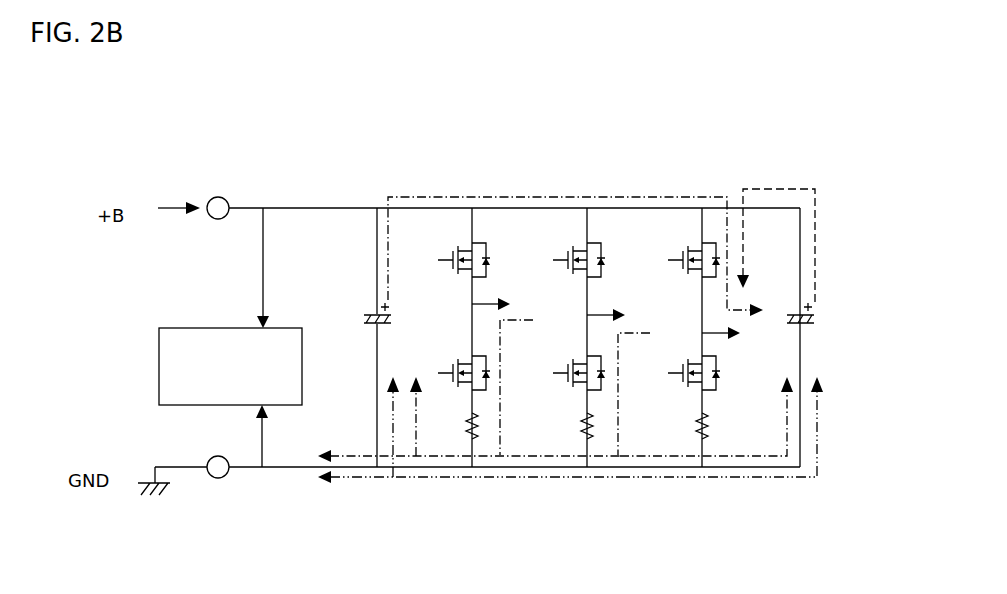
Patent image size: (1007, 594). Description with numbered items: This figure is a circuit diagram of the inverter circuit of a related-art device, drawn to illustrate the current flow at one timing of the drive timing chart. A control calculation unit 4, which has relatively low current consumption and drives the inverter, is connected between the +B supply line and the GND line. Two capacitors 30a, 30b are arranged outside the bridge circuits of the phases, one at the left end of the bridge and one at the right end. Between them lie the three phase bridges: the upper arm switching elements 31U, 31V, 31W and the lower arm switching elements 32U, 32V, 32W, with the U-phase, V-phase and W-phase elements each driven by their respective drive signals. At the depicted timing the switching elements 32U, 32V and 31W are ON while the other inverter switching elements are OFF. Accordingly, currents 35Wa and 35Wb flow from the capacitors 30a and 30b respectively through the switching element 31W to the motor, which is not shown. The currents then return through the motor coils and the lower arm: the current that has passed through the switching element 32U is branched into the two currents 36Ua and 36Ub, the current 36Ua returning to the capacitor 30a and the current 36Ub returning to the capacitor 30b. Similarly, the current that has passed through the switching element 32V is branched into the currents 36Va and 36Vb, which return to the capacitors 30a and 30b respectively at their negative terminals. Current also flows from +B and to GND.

The control calculation unit 4 is at (157, 372).
The capacitor 30a is at (372, 313).
The capacitor 30b is at (820, 318).
The U-phase upper arm switching element 31U is at (487, 237).
The V-phase upper arm switching element 31V is at (600, 240).
The W-phase switching element 31W is at (718, 240).
The U-phase switching element 32U is at (458, 362).
The V-phase switching element 32V is at (580, 387).
The W-phase lower arm switching element 32W is at (690, 387).
The current 35Wa is at (438, 197).
The current 35Wb is at (810, 188).
The current 36Ua is at (405, 478).
The current 36Va is at (465, 458).
The current 36Vb is at (755, 458).
The current 36Ub is at (812, 478).